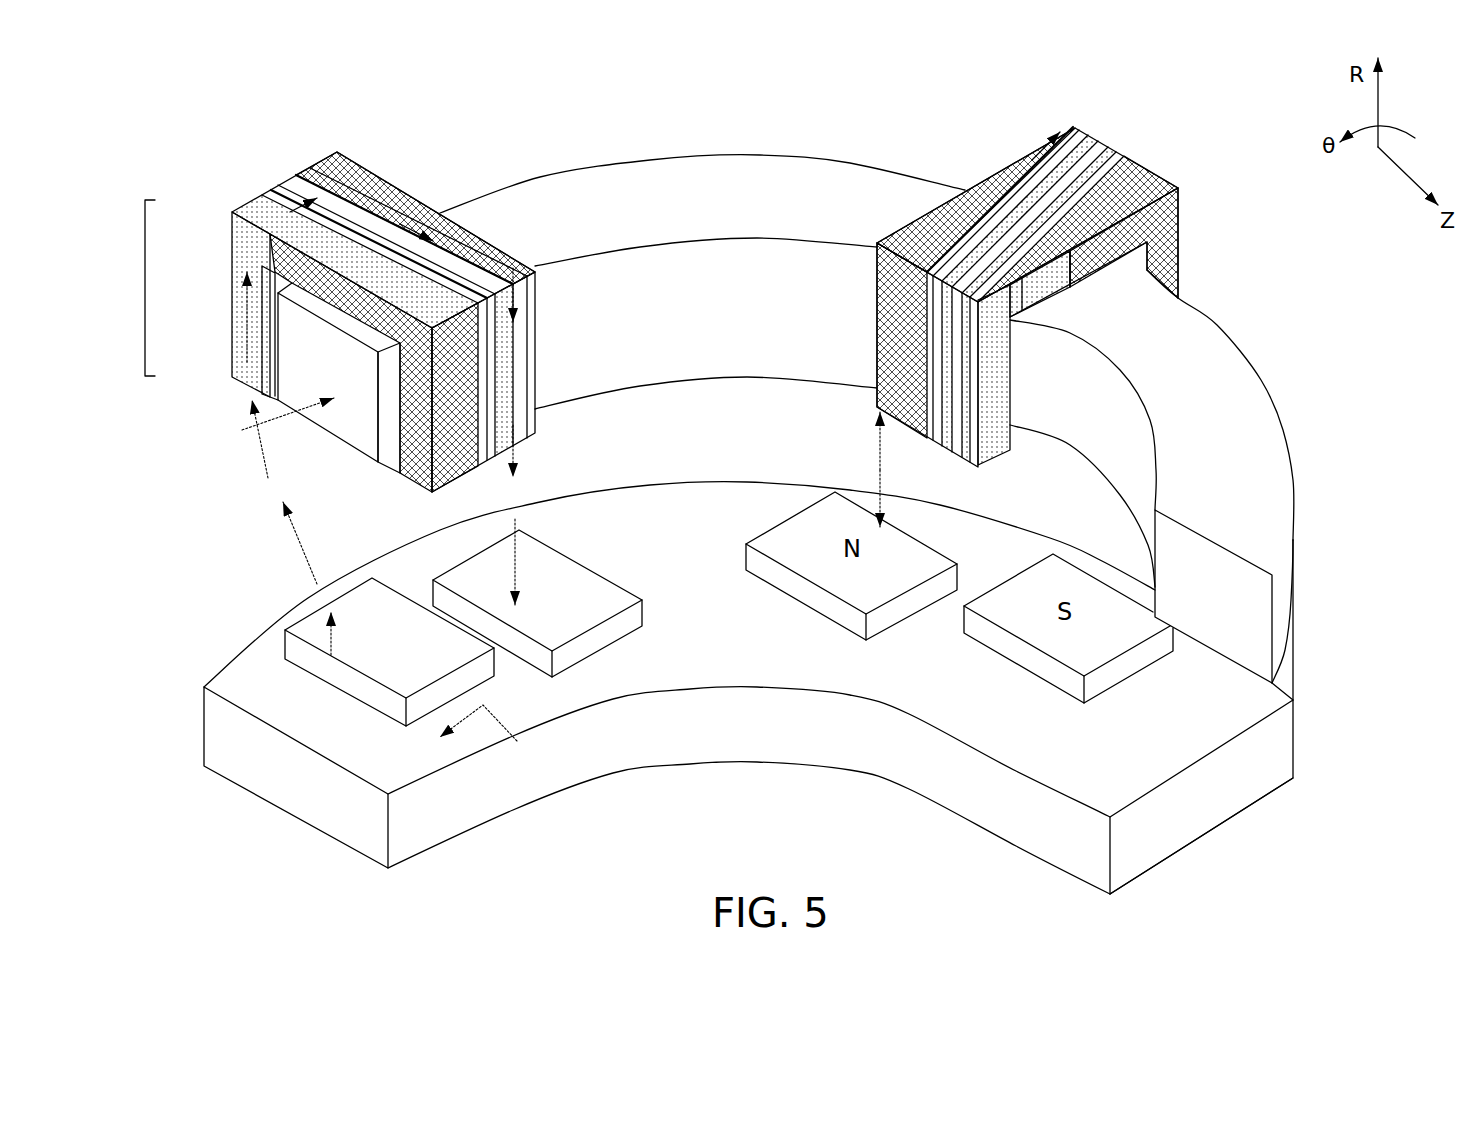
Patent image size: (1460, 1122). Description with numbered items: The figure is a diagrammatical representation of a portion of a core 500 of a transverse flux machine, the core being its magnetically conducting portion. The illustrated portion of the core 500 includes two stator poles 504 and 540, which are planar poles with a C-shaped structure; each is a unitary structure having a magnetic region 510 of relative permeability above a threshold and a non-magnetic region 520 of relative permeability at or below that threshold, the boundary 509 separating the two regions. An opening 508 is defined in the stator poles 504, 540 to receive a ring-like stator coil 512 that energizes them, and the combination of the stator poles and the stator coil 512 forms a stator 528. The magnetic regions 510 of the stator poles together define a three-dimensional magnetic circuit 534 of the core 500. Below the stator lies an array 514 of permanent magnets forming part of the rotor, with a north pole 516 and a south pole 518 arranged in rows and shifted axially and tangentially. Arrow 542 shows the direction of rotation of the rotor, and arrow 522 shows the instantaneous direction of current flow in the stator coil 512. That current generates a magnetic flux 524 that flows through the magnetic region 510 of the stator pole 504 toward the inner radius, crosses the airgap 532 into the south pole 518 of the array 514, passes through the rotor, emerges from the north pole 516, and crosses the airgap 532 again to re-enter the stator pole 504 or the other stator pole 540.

The core 500 is at (1312, 921).
The stator pole 504 is at (704, 298).
The opening 508 is at (328, 460).
The boundary 509 is at (350, 232).
The magnetic region 510 is at (256, 194).
The stator coil 512 is at (767, 165).
The array of permanent magnets 514 is at (752, 738).
The north pole 516 is at (304, 630).
The south pole 518 is at (624, 623).
The non-magnetic region 520 is at (318, 165).
The arrow 522 is at (499, 732).
The magnetic flux 524 is at (515, 300).
The stator 528 is at (143, 292).
The airgap 532 is at (877, 478).
The 3D magnetic circuit 534 is at (292, 538).
The stator pole 540 is at (990, 167).
The arrow 542 is at (242, 430).